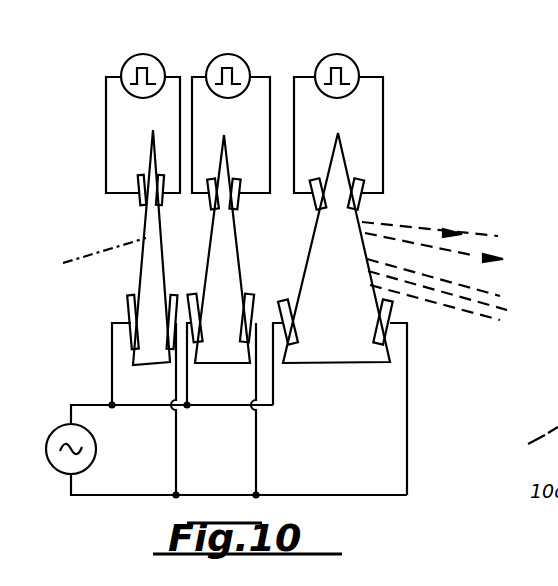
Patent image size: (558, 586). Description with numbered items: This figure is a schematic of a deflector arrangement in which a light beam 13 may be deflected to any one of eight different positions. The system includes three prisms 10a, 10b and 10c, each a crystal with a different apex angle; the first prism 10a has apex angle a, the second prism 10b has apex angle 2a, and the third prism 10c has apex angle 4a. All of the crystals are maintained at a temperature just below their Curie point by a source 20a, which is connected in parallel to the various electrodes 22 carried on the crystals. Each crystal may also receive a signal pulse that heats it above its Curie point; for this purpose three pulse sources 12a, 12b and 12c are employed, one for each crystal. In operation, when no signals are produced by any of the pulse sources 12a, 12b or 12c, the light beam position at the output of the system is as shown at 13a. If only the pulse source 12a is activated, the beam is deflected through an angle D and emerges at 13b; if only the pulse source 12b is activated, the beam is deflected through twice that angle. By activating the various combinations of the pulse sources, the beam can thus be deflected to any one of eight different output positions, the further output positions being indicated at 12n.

The pulse source 12a is at (159, 61).
The pulse source 12b is at (244, 61).
The pulse source 12c is at (353, 61).
The prism 10a is at (143, 227).
The prism 10b is at (230, 230).
The prism 10c is at (340, 358).
The electrodes 22 is at (130, 304).
The apex angle a is at (158, 159).
The apex angle 2a is at (207, 162).
The apex angle 4a is at (348, 160).
The source 20a is at (60, 473).
The light beam 13 is at (70, 262).
The light beam position 13a is at (493, 238).
The light beam position 13b is at (472, 255).
The acoustic beams 12n is at (483, 322).
The deflection angle D is at (418, 250).